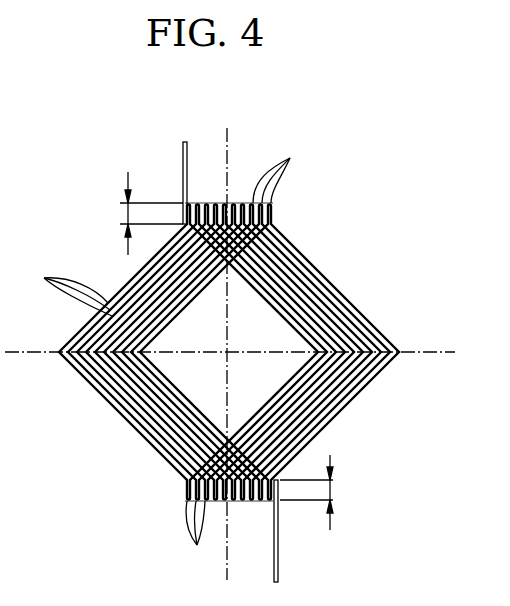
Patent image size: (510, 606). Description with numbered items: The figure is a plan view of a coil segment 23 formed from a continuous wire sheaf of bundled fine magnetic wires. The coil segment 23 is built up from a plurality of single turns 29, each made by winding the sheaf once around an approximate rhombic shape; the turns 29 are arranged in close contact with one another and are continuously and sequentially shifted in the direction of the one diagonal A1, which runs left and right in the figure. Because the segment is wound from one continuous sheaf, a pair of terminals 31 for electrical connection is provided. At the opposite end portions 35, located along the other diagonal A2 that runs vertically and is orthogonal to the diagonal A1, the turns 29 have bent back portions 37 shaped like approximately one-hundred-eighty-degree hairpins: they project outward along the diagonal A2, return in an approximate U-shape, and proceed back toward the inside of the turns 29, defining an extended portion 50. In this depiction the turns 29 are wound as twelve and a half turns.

The coil segment 23 is at (146, 174).
The single turns 29 is at (71, 283).
The terminals 31 is at (183, 152).
The opposite end portions 35 is at (275, 212).
The bent back portions 37 is at (243, 353).
The extended portion 50 is at (126, 209).
The one diagonal A1 is at (418, 349).
The other diagonal A2 is at (227, 136).